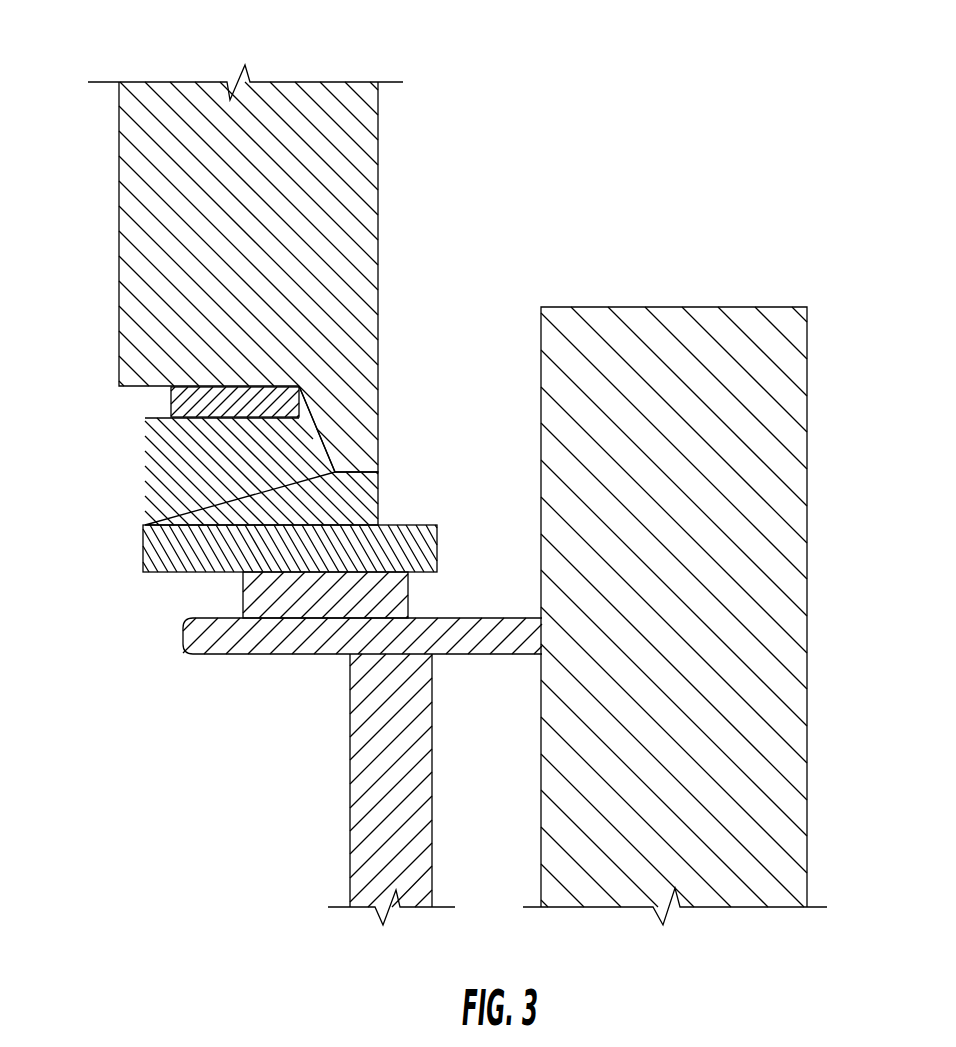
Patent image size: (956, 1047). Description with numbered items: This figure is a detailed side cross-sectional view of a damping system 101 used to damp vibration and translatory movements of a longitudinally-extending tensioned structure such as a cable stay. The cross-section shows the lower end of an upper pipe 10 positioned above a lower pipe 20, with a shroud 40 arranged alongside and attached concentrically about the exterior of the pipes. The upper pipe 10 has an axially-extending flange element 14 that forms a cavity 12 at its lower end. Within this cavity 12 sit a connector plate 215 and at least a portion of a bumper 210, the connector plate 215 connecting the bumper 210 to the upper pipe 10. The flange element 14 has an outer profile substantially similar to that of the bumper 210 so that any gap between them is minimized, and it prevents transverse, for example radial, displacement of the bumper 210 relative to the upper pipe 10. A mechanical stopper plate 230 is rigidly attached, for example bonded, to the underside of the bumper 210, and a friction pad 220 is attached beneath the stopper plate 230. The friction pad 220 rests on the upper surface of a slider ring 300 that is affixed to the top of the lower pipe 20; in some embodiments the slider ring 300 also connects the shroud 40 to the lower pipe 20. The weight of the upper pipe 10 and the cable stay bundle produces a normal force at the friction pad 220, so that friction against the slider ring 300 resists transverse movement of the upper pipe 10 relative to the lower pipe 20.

The damping system 101 is at (625, 118).
The upper pipe 10 is at (117, 210).
The cavity 12 is at (310, 409).
The flange element 14 is at (358, 432).
The connector plate 215 is at (170, 402).
The bumper 210 is at (143, 502).
The mechanical stopper plate 230 is at (183, 572).
The friction pad 220 is at (408, 600).
The slider ring 300 is at (223, 654).
The lower pipe 20 is at (350, 857).
The shroud 40 is at (808, 520).